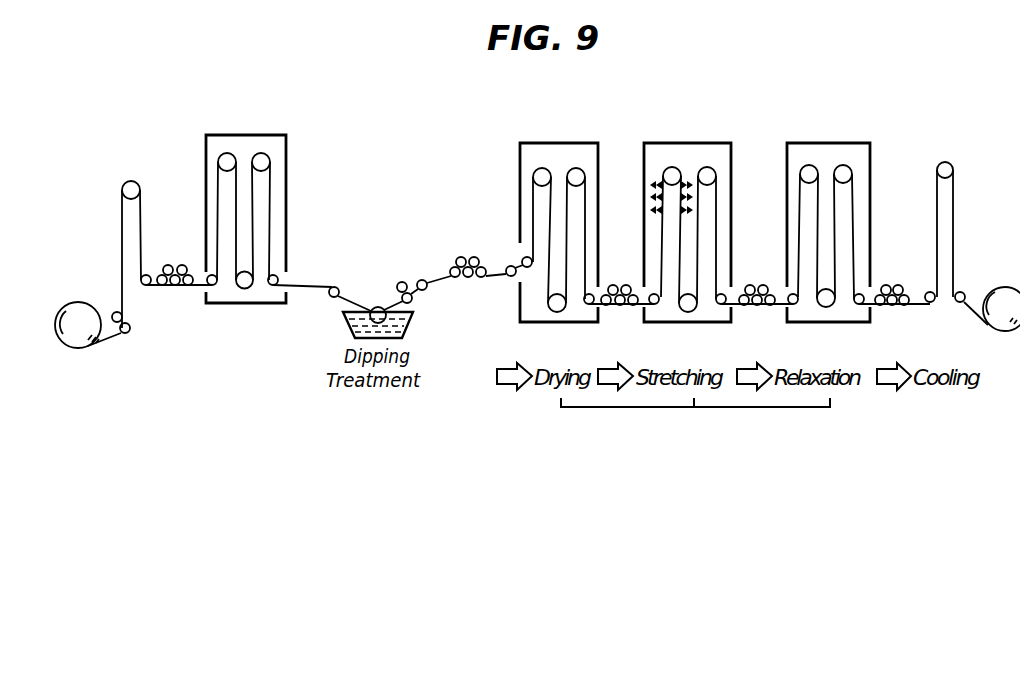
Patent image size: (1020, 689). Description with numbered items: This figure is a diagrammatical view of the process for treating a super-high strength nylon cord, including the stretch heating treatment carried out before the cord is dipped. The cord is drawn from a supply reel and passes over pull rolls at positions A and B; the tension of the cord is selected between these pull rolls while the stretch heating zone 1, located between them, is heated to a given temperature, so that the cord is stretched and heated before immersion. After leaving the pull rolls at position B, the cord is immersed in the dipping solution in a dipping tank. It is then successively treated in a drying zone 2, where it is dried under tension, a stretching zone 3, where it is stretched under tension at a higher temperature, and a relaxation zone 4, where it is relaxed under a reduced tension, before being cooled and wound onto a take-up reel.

The stretch heating zone 1 is at (268, 135).
The drying zone 2 is at (577, 143).
The stretching zone 3 is at (708, 143).
The relaxation zone 4 is at (847, 143).
The pull roll position A is at (175, 262).
The pull roll position B is at (468, 256).